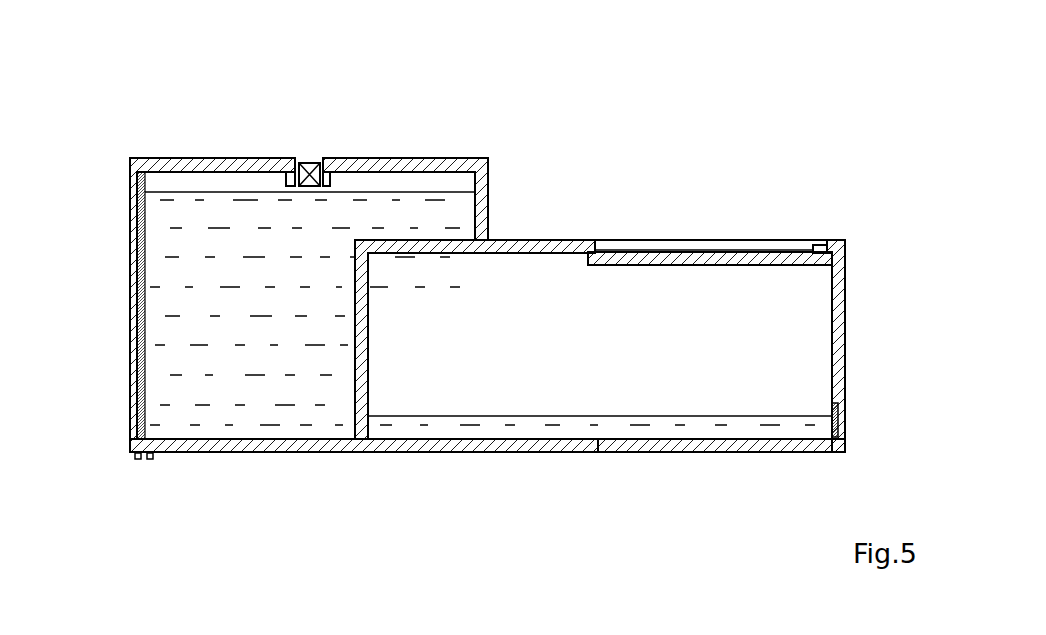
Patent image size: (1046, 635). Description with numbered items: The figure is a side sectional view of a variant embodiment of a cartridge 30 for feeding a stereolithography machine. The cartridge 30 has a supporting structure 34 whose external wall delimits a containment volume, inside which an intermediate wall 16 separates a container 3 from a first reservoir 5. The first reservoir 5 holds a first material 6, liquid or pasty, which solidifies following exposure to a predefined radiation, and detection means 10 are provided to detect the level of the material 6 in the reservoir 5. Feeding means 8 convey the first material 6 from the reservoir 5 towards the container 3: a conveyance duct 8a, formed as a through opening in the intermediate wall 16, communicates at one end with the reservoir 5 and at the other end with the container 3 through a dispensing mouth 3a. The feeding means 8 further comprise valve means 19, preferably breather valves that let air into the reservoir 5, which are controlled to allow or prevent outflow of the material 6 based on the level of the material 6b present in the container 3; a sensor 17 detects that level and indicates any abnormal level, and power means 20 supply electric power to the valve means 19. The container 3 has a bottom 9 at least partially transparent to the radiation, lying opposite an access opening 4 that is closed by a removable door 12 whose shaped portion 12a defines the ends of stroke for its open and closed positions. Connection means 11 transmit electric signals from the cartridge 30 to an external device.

The cartridge 30 is at (121, 113).
The first reservoir 5 is at (376, 170).
The feeding means 8 is at (302, 155).
The valve means 19 is at (311, 165).
The first material 6 is at (177, 232).
The detection means 10 is at (140, 275).
The intermediate wall 16 is at (355, 410).
The conveyance duct 8a is at (359, 444).
The dispensing mouth 3a is at (373, 443).
The bottom 9 is at (630, 454).
The connection means 11 is at (137, 463).
The power means 20 is at (153, 463).
The supporting structure 34 is at (848, 358).
The shaped portion 12a is at (827, 243).
The access opening 4 is at (771, 242).
The door 12 is at (655, 257).
The container 3 is at (791, 334).
The mixture 6b is at (748, 425).
The sensor 17 is at (843, 410).